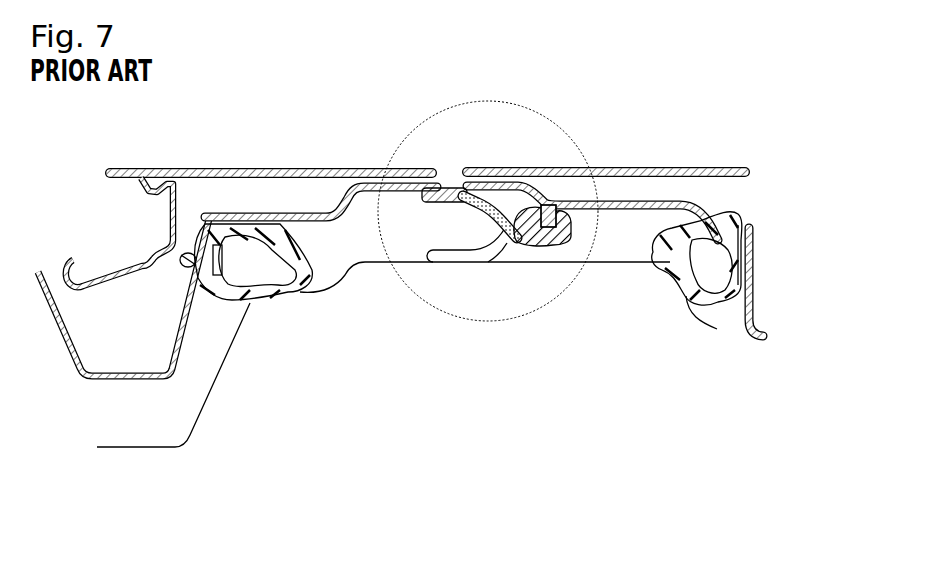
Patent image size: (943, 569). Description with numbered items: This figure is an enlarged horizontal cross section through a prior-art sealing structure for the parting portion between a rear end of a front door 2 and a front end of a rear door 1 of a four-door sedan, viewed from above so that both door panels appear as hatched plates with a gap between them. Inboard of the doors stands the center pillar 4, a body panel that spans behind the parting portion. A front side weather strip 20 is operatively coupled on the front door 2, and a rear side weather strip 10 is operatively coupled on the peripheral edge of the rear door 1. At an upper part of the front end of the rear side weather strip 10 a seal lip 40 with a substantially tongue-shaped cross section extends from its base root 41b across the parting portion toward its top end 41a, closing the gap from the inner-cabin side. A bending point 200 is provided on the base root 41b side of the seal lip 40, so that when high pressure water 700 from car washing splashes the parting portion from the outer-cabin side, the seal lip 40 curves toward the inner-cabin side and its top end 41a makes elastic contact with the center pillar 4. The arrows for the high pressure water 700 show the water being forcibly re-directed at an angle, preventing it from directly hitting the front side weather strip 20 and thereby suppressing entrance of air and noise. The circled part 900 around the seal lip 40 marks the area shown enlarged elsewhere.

The rear door 1 is at (633, 165).
The front door 2 is at (298, 167).
The center pillar 4 is at (377, 264).
The rear side weather strip 10 is at (655, 247).
The front side weather strip 20 is at (228, 306).
The seal lip 40 is at (507, 255).
The top end 41a is at (432, 183).
The base root 41b is at (547, 242).
The bending point 200 is at (507, 242).
The high pressure water 700 is at (457, 178).
The part 900 is at (553, 123).